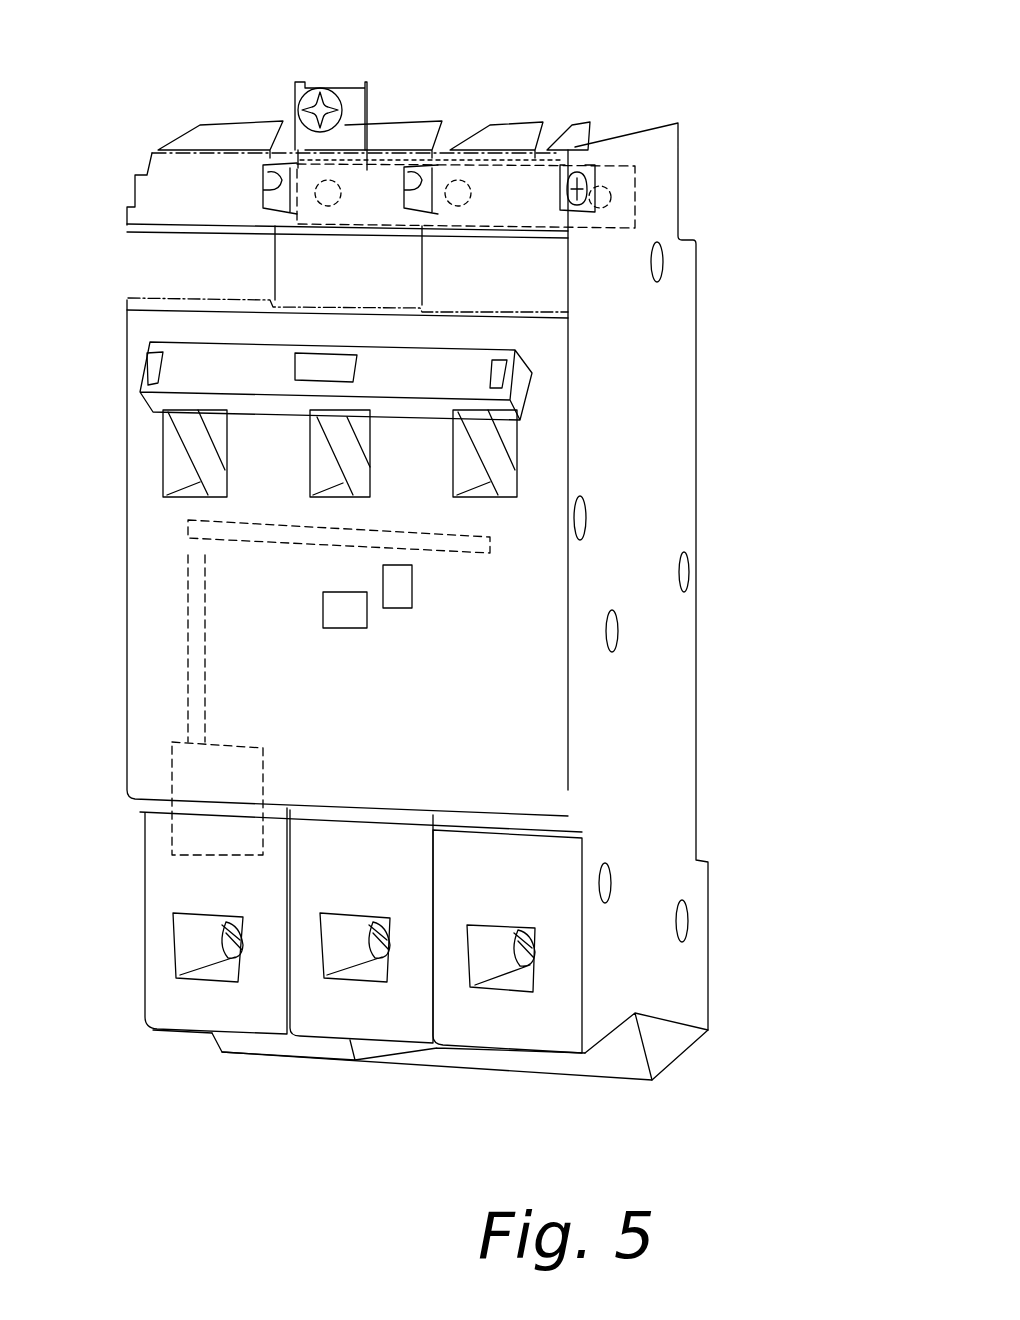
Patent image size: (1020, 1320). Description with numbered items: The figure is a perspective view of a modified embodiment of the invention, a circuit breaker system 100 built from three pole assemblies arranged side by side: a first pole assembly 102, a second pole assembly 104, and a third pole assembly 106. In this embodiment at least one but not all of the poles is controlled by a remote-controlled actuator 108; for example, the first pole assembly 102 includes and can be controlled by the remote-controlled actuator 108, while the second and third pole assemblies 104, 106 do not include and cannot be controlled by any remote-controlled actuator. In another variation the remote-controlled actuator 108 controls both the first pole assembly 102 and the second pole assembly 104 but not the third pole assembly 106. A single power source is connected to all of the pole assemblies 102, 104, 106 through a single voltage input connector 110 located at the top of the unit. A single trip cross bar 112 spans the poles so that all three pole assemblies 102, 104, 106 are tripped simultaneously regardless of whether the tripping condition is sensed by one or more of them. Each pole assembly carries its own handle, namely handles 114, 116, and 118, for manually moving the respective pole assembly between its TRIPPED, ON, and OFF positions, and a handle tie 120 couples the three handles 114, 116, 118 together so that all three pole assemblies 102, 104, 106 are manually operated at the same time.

The circuit breaker system 100 is at (678, 52).
The first pole assembly 102 is at (197, 1008).
The second pole assembly 104 is at (335, 1012).
The third pole assembly 106 is at (500, 1033).
The remote-controlled actuator 108 is at (178, 760).
The voltage input connector 110 is at (372, 111).
The trip cross bar 112 is at (190, 530).
The handle 114 is at (193, 430).
The handle 116 is at (367, 428).
The handle 118 is at (512, 443).
The handle tie 120 is at (198, 353).